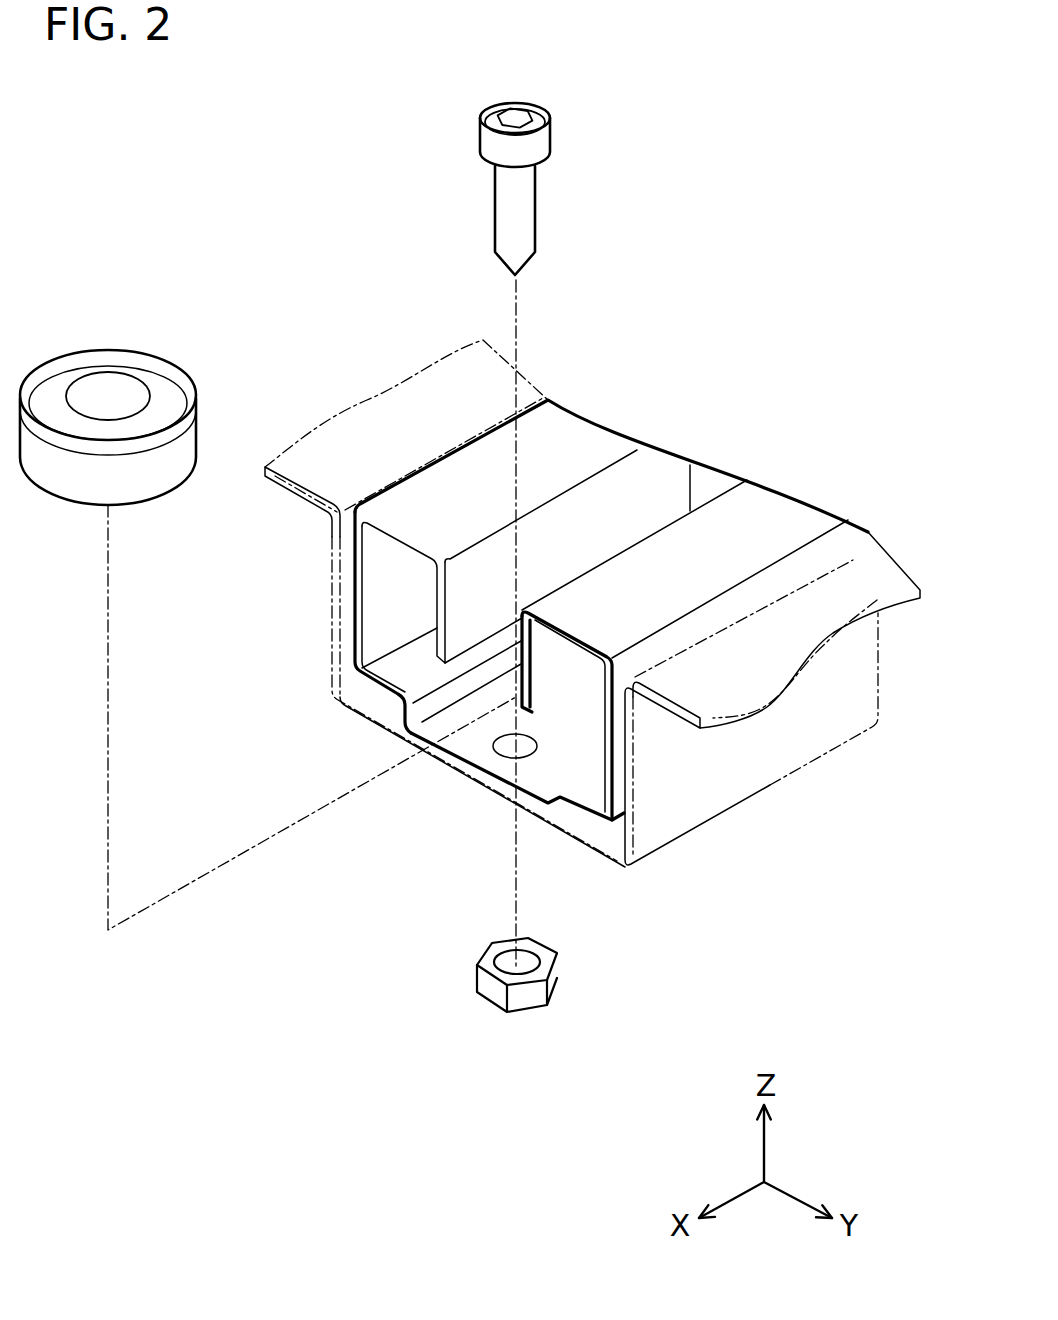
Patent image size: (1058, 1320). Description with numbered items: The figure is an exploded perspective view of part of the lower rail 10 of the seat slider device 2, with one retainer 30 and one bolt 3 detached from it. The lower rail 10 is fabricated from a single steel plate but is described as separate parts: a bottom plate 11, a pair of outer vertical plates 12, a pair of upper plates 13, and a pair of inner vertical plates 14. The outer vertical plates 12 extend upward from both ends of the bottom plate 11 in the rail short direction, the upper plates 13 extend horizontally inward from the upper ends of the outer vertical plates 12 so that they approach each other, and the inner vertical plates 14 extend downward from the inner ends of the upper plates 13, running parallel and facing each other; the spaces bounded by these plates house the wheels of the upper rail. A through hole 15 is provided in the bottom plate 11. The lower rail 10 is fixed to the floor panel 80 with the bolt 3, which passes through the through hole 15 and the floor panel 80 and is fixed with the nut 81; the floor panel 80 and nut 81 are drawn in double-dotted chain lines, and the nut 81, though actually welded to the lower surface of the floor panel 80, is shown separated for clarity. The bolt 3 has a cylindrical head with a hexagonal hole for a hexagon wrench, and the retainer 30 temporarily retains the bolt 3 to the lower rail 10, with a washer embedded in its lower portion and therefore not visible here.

The seat slider device 2 is at (258, 245).
The bolt 3 is at (527, 190).
The lower rail 10 is at (604, 352).
The bottom plate 11 is at (520, 770).
The outer vertical plates 12 is at (356, 631).
The upper plates 13 is at (585, 452).
The inner vertical plates 14 is at (441, 589).
The through hole 15 is at (507, 745).
The retainer 30 is at (77, 368).
The floor panel 80 is at (863, 578).
The nut 81 is at (490, 992).